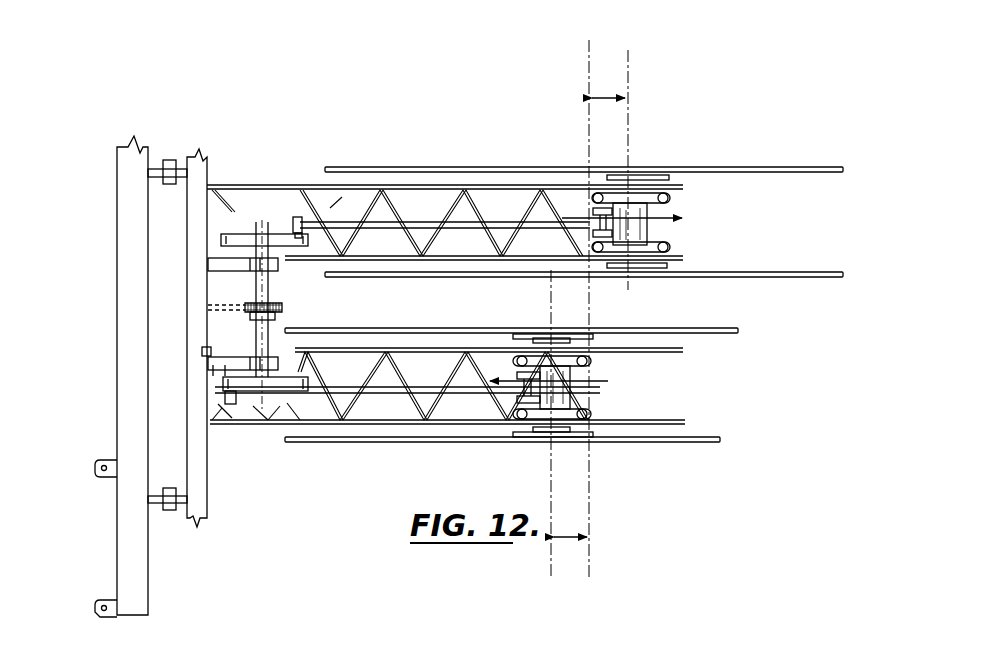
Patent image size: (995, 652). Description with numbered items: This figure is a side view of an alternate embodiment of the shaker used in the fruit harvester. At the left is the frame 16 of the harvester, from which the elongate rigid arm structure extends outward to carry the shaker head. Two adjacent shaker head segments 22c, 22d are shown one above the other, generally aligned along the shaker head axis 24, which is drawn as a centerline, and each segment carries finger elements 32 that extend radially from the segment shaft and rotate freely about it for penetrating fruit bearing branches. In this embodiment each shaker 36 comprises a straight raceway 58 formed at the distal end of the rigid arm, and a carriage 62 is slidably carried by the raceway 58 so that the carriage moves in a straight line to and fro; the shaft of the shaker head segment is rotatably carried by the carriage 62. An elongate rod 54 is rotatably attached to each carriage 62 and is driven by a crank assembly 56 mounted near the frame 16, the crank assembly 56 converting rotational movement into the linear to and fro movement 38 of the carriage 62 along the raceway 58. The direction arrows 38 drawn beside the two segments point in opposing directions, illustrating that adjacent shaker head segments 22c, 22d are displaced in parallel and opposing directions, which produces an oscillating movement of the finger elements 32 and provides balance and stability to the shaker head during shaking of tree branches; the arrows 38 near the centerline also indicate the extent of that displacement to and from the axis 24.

The frame 16 is at (122, 172).
The shaker head segment 22c is at (692, 190).
The shaker head segment 22d is at (657, 397).
The shaker head axis 24 is at (590, 52).
The finger elements 32 is at (748, 172).
The shaker 36 is at (628, 148).
The direction arrows 38 is at (610, 97).
The elongate rod 54 is at (420, 224).
The crank assembly 56 is at (243, 254).
The straight raceway 58 is at (645, 262).
The carriage 62 is at (652, 185).